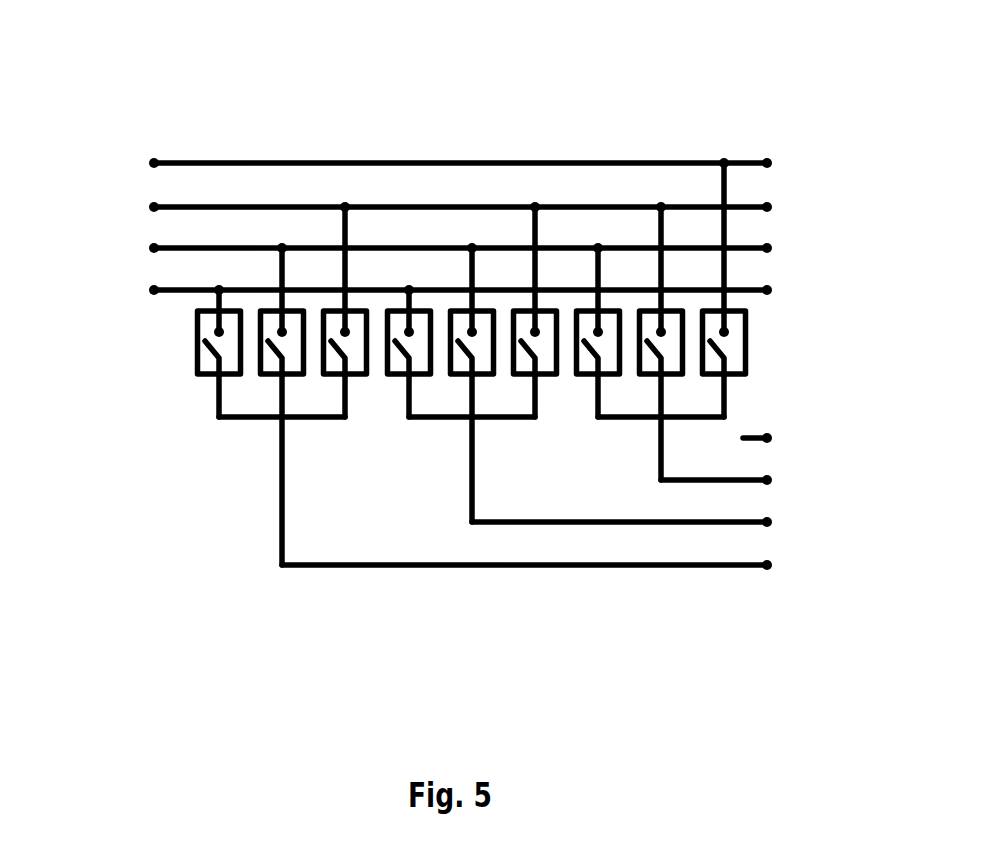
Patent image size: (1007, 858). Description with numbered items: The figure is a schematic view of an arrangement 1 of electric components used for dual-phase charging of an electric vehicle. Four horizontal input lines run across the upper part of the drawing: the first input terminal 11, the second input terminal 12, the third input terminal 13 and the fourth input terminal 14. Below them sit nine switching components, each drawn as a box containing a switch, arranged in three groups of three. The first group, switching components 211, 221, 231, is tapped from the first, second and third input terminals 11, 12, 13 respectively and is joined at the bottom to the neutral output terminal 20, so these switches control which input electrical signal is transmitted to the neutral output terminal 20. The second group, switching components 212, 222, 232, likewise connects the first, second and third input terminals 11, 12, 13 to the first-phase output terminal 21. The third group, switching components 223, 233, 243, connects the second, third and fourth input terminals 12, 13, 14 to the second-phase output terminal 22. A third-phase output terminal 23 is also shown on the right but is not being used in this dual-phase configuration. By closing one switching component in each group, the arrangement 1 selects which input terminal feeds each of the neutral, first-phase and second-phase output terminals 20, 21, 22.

The arrangement 1 is at (747, 108).
The first input terminal 11 is at (154, 290).
The second input terminal 12 is at (154, 248).
The third input terminal 13 is at (154, 207).
The fourth input terminal 14 is at (154, 164).
The neutral output terminal 20 is at (767, 565).
The first-phase output terminal 21 is at (767, 522).
The second-phase output terminal 22 is at (767, 480).
The third-phase output terminal 23 is at (766, 437).
The switching component 211 is at (205, 378).
The switching component 221 is at (271, 378).
The switching component 231 is at (335, 378).
The switching component 212 is at (396, 378).
The switching component 222 is at (458, 378).
The switching component 232 is at (525, 378).
The switching component 223 is at (585, 378).
The switching component 233 is at (648, 378).
The switching component 243 is at (748, 350).